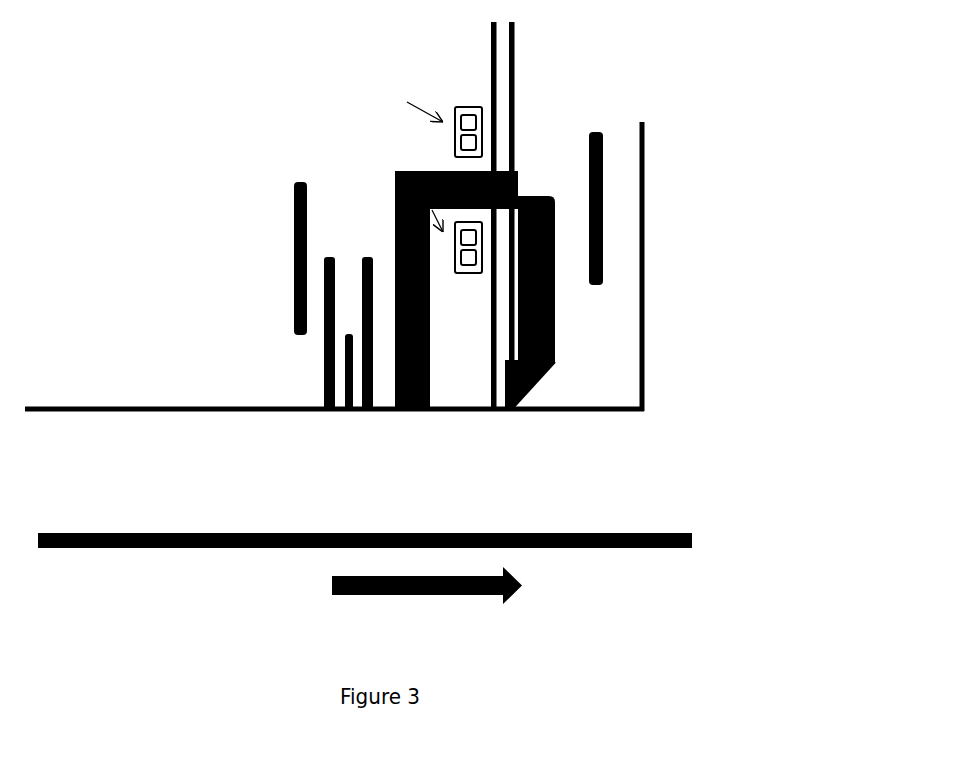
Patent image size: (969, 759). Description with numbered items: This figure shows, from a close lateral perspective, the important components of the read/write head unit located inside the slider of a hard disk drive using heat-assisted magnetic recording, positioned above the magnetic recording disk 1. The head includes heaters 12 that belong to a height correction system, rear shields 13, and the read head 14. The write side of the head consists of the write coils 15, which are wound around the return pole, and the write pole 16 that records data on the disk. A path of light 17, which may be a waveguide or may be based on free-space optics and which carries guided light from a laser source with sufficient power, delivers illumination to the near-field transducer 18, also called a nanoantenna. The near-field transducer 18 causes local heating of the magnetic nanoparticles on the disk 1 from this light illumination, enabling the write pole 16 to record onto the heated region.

The magnetic recording disk 1 is at (641, 550).
The heaters 12 is at (283, 224).
The rear shields 13 is at (370, 243).
The read head 14 is at (347, 372).
The write coils 15 is at (413, 168).
The write pole 16 is at (569, 333).
The path of light 17 is at (521, 122).
The near-field transducer 18 is at (523, 402).